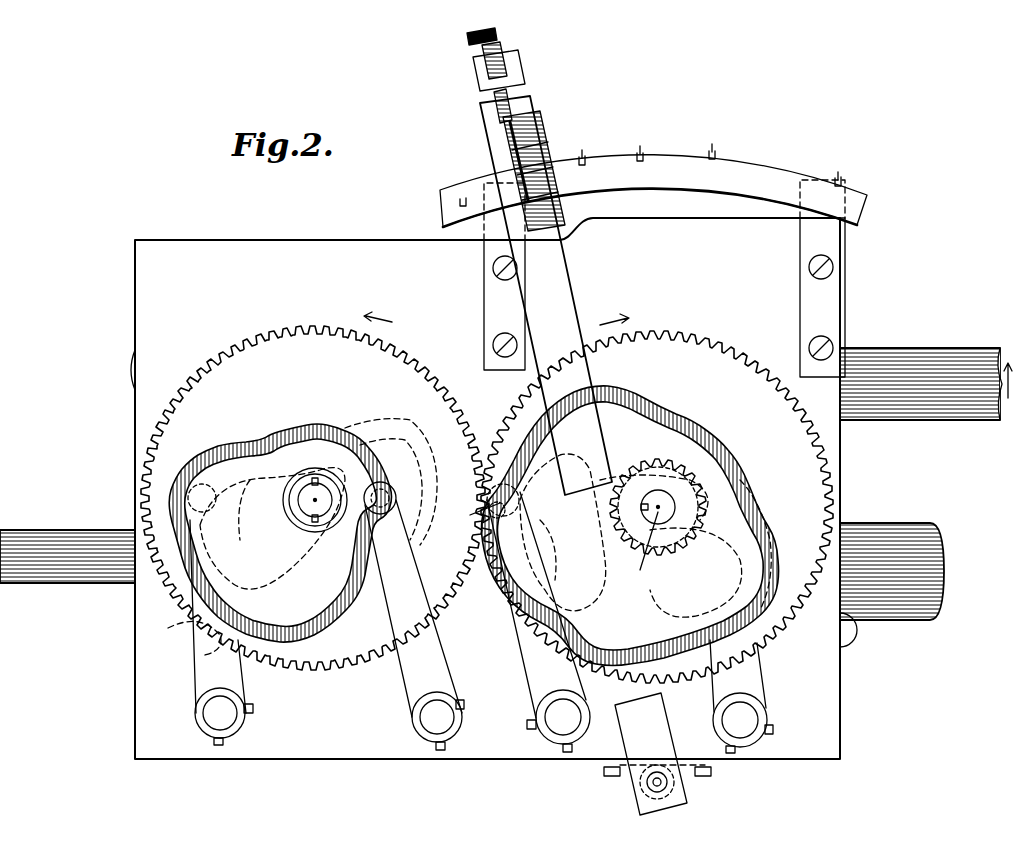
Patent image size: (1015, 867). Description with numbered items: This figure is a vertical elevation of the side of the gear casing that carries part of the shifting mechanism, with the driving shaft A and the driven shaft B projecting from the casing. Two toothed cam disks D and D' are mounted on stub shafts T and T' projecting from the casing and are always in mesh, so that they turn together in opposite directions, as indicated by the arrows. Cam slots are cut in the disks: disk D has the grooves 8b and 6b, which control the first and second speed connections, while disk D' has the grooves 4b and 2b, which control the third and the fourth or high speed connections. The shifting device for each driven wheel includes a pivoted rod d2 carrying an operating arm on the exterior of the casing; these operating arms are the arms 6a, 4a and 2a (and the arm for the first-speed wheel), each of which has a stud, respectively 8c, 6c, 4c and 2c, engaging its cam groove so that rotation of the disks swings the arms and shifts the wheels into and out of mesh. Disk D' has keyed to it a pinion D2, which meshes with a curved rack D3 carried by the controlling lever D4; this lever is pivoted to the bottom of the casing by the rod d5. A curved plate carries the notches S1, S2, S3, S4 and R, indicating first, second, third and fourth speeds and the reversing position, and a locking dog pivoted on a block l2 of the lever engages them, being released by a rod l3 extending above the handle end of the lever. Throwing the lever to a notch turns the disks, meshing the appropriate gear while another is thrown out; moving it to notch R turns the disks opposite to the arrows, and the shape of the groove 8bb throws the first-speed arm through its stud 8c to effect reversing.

The driving shaft A is at (862, 350).
The driven shaft B is at (853, 530).
The cam disk D is at (313, 491).
The cam disk D' is at (657, 498).
The pinion D2 is at (658, 512).
The curved rack D3 is at (722, 468).
The controlling lever D4 is at (560, 275).
The reversing notch R is at (652, 189).
The first-speed notch S1 is at (582, 158).
The second-speed notch S2 is at (640, 154).
The third-speed notch S3 is at (712, 152).
The fourth-speed notch S4 is at (838, 180).
The stub shaft T is at (293, 508).
The stub shaft T' is at (644, 546).
The block l2 is at (528, 122).
The rod l3 is at (500, 118).
The operating arm 2a is at (758, 674).
The cam groove 2b is at (608, 548).
The stud 2c is at (745, 502).
The operating arm 4a is at (530, 688).
The cam groove 4b is at (590, 636).
The pin 4c is at (580, 520).
The operating arm 6a is at (248, 686).
The cam groove 6b is at (258, 442).
The stud 6c is at (400, 488).
The cam groove 8b is at (376, 425).
The reversing cam groove 8bb is at (200, 638).
The stud 8c is at (272, 529).
The pivoted rod d2 is at (222, 714).
The pivot rod d5 is at (652, 784).